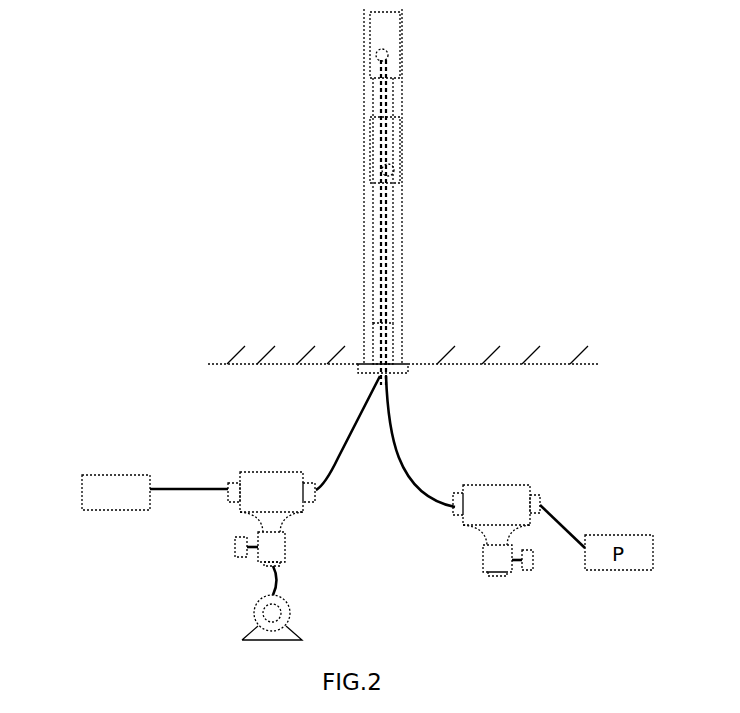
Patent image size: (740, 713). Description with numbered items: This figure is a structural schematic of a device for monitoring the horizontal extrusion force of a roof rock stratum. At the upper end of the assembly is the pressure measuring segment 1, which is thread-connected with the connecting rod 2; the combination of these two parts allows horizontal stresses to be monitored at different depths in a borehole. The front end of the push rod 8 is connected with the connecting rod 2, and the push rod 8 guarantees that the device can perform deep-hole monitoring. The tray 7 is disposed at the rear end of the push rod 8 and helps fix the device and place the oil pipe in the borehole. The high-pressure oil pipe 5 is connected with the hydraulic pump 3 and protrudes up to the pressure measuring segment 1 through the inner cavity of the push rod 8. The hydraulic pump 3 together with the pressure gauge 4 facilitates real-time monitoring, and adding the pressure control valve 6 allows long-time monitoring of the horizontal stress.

The pressure measuring segment 1 is at (389, 31).
The connecting rod 2 is at (397, 222).
The hydraulic pump 3 is at (253, 613).
The pressure gauge 4 is at (122, 474).
The high-pressure oil pipe 5 is at (391, 421).
The pressure control valve 6 is at (232, 473).
The tray 7 is at (360, 373).
The push rod 8 is at (396, 327).